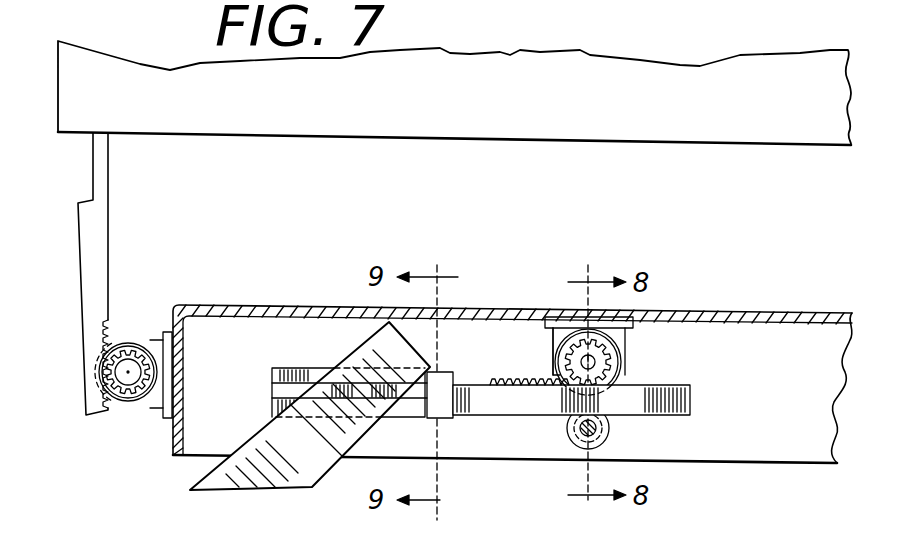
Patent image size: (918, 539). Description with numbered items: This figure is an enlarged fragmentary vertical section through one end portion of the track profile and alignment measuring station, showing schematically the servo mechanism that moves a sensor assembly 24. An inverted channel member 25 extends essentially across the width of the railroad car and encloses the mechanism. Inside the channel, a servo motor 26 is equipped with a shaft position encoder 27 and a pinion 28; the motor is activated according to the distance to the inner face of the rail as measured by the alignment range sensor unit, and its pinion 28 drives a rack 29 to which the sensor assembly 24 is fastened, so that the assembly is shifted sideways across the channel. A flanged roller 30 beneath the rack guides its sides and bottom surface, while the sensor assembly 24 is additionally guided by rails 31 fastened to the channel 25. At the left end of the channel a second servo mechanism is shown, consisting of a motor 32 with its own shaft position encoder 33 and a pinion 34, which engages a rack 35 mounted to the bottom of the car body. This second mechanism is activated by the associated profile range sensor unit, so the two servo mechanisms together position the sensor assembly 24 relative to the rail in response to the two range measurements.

The sensor assembly 24 is at (191, 494).
The inverted channel member 25 is at (748, 313).
The servo motor 26 is at (628, 346).
The shaft position encoder 27 is at (553, 347).
The pinion 28 is at (612, 366).
The rack 29 is at (691, 401).
The flanged roller 30 is at (610, 433).
The rails 31 is at (312, 342).
The motor 32 is at (127, 343).
The shaft position encoder 33 is at (128, 402).
The pinion 34 is at (140, 343).
The rack 35 is at (108, 227).